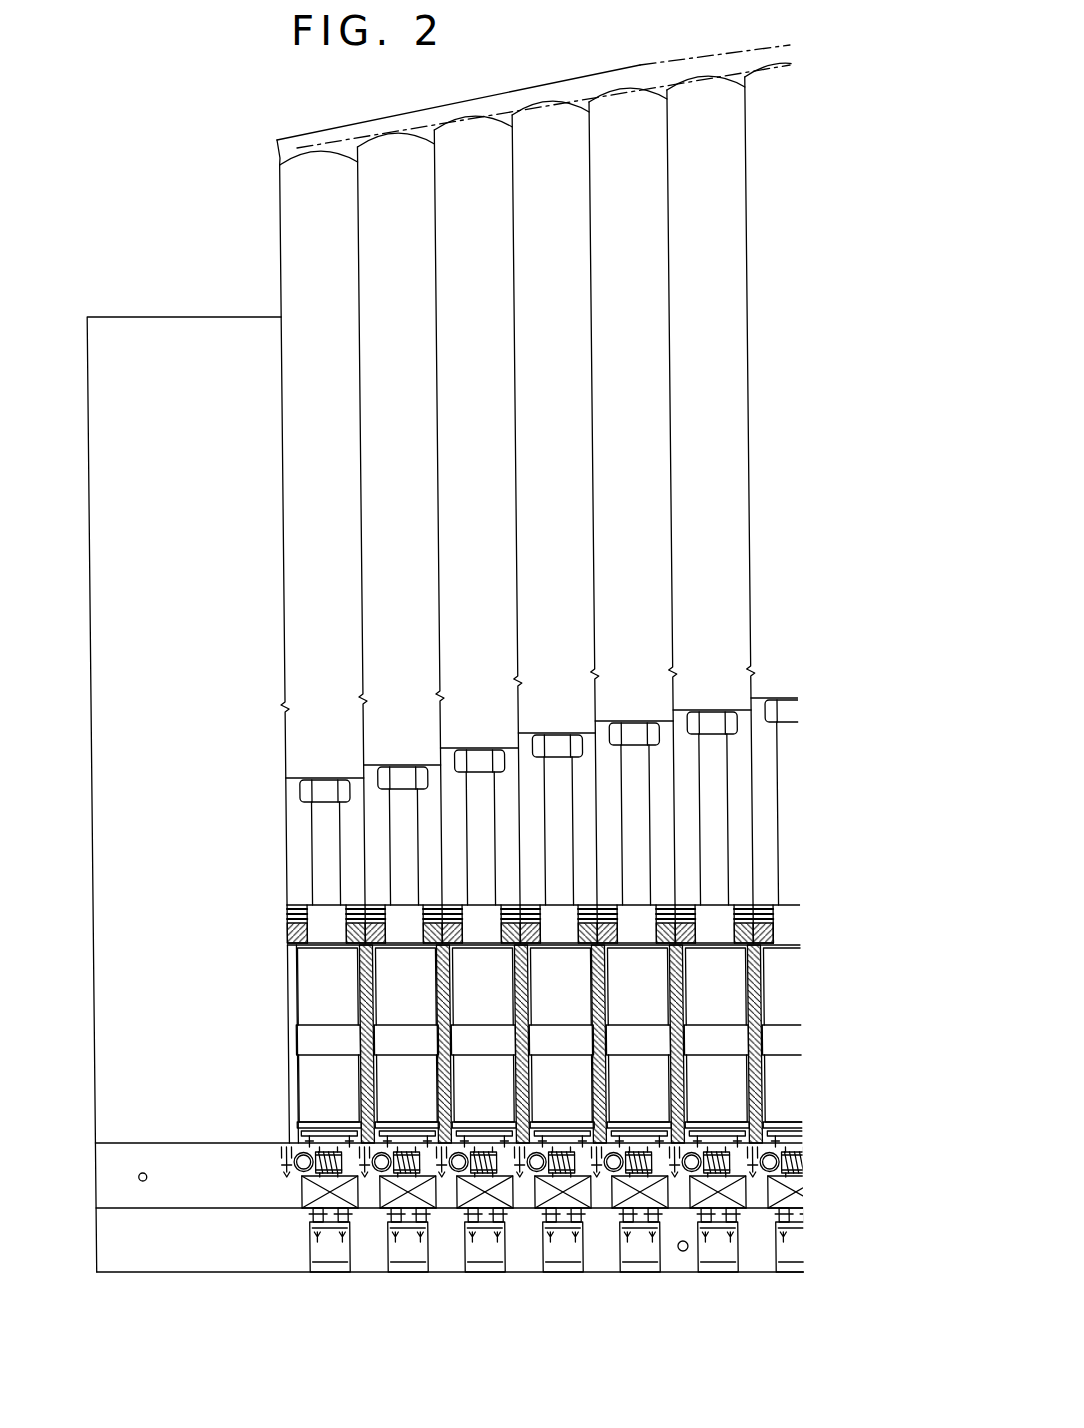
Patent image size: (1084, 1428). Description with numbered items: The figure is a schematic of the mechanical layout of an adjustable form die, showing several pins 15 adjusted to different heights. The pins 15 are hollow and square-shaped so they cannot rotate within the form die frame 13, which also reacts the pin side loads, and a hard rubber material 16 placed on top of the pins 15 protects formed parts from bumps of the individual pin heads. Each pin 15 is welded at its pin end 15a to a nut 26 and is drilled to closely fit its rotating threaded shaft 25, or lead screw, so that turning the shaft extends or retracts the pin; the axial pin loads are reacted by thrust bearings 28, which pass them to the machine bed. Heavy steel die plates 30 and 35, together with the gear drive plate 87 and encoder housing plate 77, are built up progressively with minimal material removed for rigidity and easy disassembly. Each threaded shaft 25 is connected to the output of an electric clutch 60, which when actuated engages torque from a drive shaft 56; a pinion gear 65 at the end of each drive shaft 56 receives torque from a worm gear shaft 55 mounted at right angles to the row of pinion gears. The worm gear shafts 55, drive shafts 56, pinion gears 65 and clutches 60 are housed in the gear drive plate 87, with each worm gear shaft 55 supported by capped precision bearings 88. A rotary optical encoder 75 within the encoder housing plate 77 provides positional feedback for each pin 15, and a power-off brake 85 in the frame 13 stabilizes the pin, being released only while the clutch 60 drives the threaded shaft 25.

The form die frame 13 is at (183, 514).
The hard rubber material 16 is at (311, 118).
The pins 15 is at (298, 212).
The pin end 15a is at (304, 762).
The nuts 26 is at (298, 795).
The threaded shaft 25 is at (318, 848).
The thrust bearings 28 is at (268, 909).
The die plate 30 is at (806, 890).
The die plate 35 is at (748, 1042).
The power-off brake 85 is at (333, 996).
The pinion gear 65 is at (302, 1110).
The drive shaft 56 is at (336, 1117).
The capped precision bearings 88 is at (258, 1155).
The gear drive plate 87 is at (105, 1183).
The worm gear shaft 55 is at (285, 1173).
The electric clutch 60 is at (288, 1197).
The rotary optical encoder 75 is at (318, 1247).
The encoder housing plate 77 is at (106, 1255).